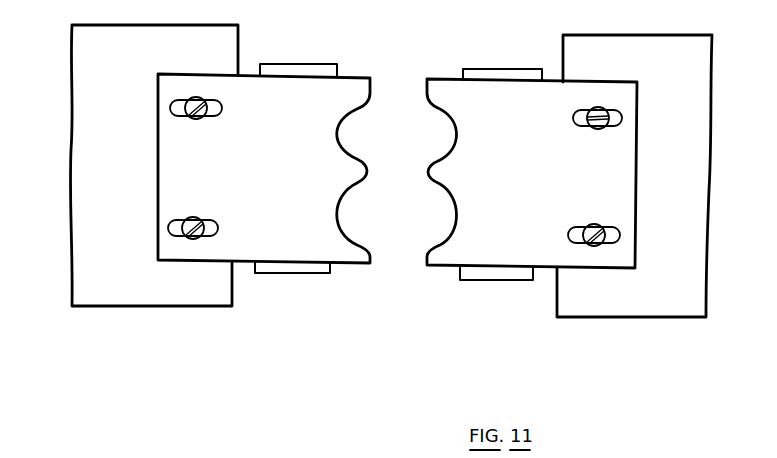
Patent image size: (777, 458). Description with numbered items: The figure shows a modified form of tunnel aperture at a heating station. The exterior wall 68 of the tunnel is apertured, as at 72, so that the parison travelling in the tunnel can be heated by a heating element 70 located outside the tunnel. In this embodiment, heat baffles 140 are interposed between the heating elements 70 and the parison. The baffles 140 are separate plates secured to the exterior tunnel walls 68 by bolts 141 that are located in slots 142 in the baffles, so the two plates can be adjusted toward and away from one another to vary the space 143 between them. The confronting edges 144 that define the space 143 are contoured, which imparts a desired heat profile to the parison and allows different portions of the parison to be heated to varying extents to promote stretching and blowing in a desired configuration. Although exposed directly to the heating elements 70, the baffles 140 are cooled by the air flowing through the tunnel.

The exterior wall 68 is at (78, 197).
The heating element 70 is at (293, 65).
The aperture 72 is at (233, 307).
The heat baffle 140 is at (300, 176).
The bolt 141 is at (598, 130).
The slot 142 is at (573, 115).
The space 143 is at (402, 98).
The confronting edges 144 is at (368, 171).